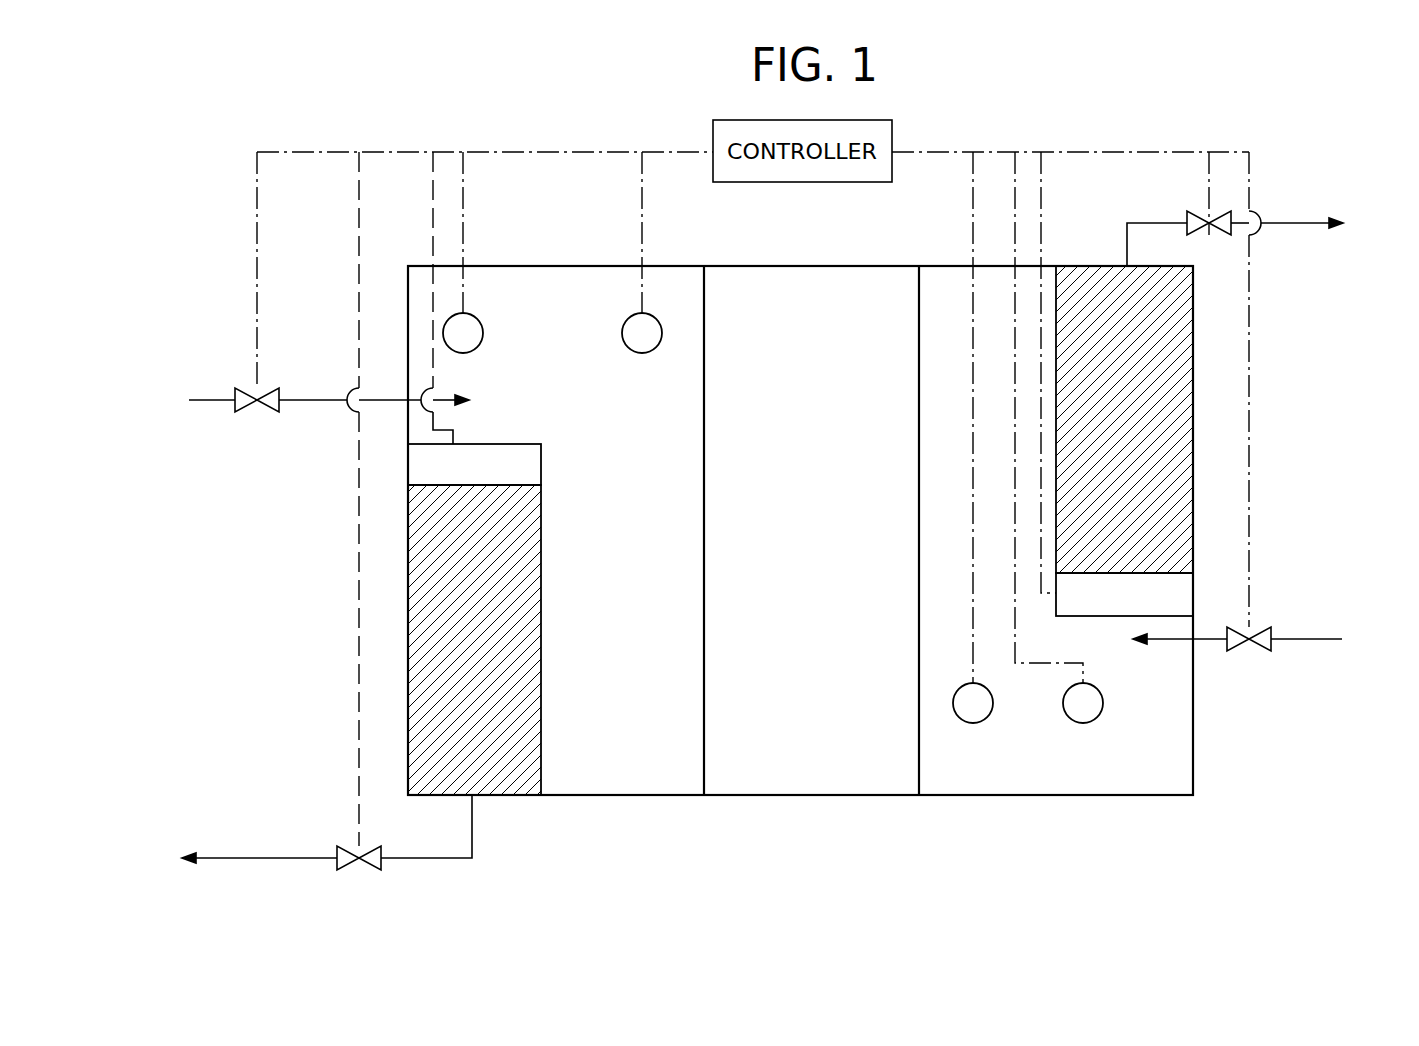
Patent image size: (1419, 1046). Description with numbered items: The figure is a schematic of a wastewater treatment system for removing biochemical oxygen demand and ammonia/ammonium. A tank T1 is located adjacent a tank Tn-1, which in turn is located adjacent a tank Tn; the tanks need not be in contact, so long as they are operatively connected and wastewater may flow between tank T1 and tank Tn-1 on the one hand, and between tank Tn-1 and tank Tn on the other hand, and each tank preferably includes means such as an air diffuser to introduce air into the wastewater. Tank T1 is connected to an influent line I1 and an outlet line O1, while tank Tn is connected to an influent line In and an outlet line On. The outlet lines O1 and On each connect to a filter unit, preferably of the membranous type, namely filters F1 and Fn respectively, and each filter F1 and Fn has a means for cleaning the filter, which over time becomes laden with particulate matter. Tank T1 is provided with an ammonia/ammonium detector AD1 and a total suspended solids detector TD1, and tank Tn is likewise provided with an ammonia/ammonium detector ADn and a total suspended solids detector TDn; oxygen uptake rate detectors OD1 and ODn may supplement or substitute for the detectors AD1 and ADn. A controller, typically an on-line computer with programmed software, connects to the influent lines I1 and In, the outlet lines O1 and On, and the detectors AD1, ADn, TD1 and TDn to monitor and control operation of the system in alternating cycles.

The tank T1 is at (556, 530).
The tank Tn-1 is at (811, 530).
The tank Tn is at (1056, 530).
The filter unit F1 is at (407, 586).
The filter unit Fn is at (1194, 405).
The TSS detector TD1 is at (483, 327).
The TSS detector TDn is at (1104, 712).
The NH3/NH4+ detector AD1 is at (630, 381).
The OUR detector OD1 is at (656, 352).
The NH3/NH4+ detector ADn is at (953, 765).
The OUR detector ODn is at (972, 724).
The influent line I1 is at (317, 401).
The outlet line O1 is at (312, 833).
The influent line In is at (1247, 638).
The outlet line On is at (1253, 238).